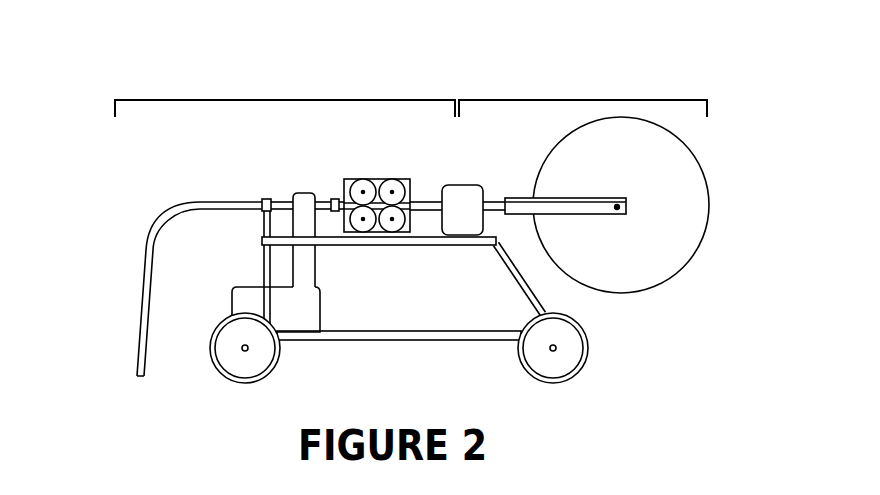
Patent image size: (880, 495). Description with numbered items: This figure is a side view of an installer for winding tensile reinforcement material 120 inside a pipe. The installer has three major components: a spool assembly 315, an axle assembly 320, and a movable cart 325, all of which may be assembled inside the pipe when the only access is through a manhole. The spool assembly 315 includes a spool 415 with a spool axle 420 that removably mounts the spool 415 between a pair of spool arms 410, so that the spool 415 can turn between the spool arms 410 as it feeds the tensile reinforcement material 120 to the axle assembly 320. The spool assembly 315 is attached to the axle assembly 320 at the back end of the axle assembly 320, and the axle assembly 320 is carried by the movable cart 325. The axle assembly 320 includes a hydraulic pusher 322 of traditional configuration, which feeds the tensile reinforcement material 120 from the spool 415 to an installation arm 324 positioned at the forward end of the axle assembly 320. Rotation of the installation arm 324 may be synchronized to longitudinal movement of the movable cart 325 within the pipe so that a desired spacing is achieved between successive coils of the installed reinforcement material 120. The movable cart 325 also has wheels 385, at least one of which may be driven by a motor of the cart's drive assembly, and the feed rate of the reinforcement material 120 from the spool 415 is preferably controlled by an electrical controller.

The axle assembly 320 is at (318, 100).
The spool assembly 315 is at (528, 100).
The tensile reinforcement material 120 is at (355, 190).
The hydraulic pusher 322 is at (402, 180).
The installation arm 324 is at (153, 228).
The spool axle 420 is at (617, 207).
The spool 415 is at (634, 247).
The spool arms 410 is at (565, 208).
The movable cart 325 is at (407, 337).
The wheels 385 is at (242, 370).